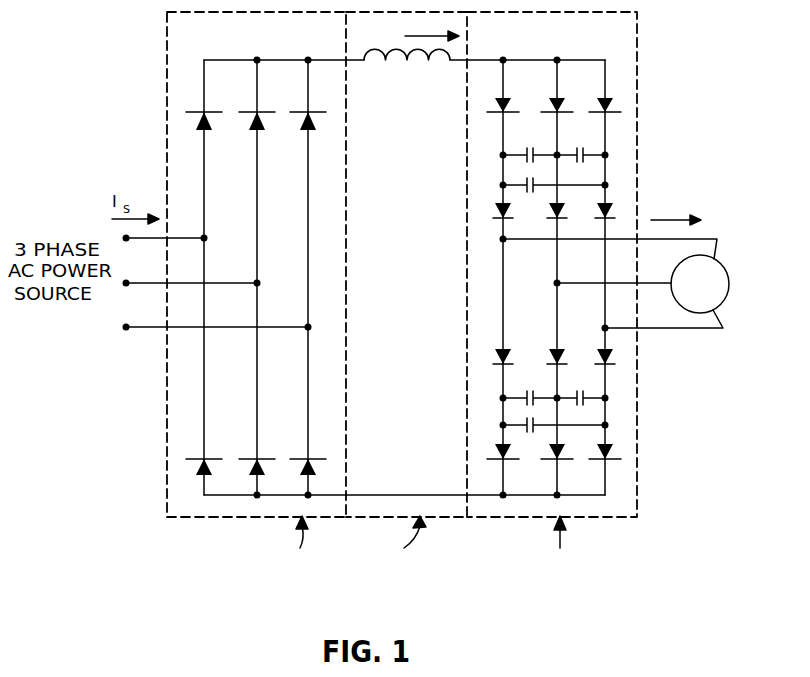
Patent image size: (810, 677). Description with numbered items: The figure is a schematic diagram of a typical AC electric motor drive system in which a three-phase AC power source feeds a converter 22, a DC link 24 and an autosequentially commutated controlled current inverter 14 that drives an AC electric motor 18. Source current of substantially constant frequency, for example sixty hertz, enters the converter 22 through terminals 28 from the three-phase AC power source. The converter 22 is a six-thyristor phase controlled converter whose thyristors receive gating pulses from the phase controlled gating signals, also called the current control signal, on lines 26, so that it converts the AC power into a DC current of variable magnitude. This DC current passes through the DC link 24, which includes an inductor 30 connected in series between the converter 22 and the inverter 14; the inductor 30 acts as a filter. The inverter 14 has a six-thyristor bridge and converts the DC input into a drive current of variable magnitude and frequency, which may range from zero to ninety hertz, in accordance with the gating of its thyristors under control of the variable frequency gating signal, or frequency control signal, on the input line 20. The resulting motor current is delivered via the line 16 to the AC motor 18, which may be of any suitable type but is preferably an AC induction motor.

The autosequentially commutated controlled current inverter 14 is at (634, 470).
The line 16 is at (719, 238).
The AC electric motor 18 is at (729, 268).
The input line 20 is at (584, 121).
The converter 22 is at (166, 492).
The DC link 24 is at (384, 522).
The lines 26 is at (207, 456).
The terminals 28 is at (181, 232).
The inductor 30 is at (367, 65).